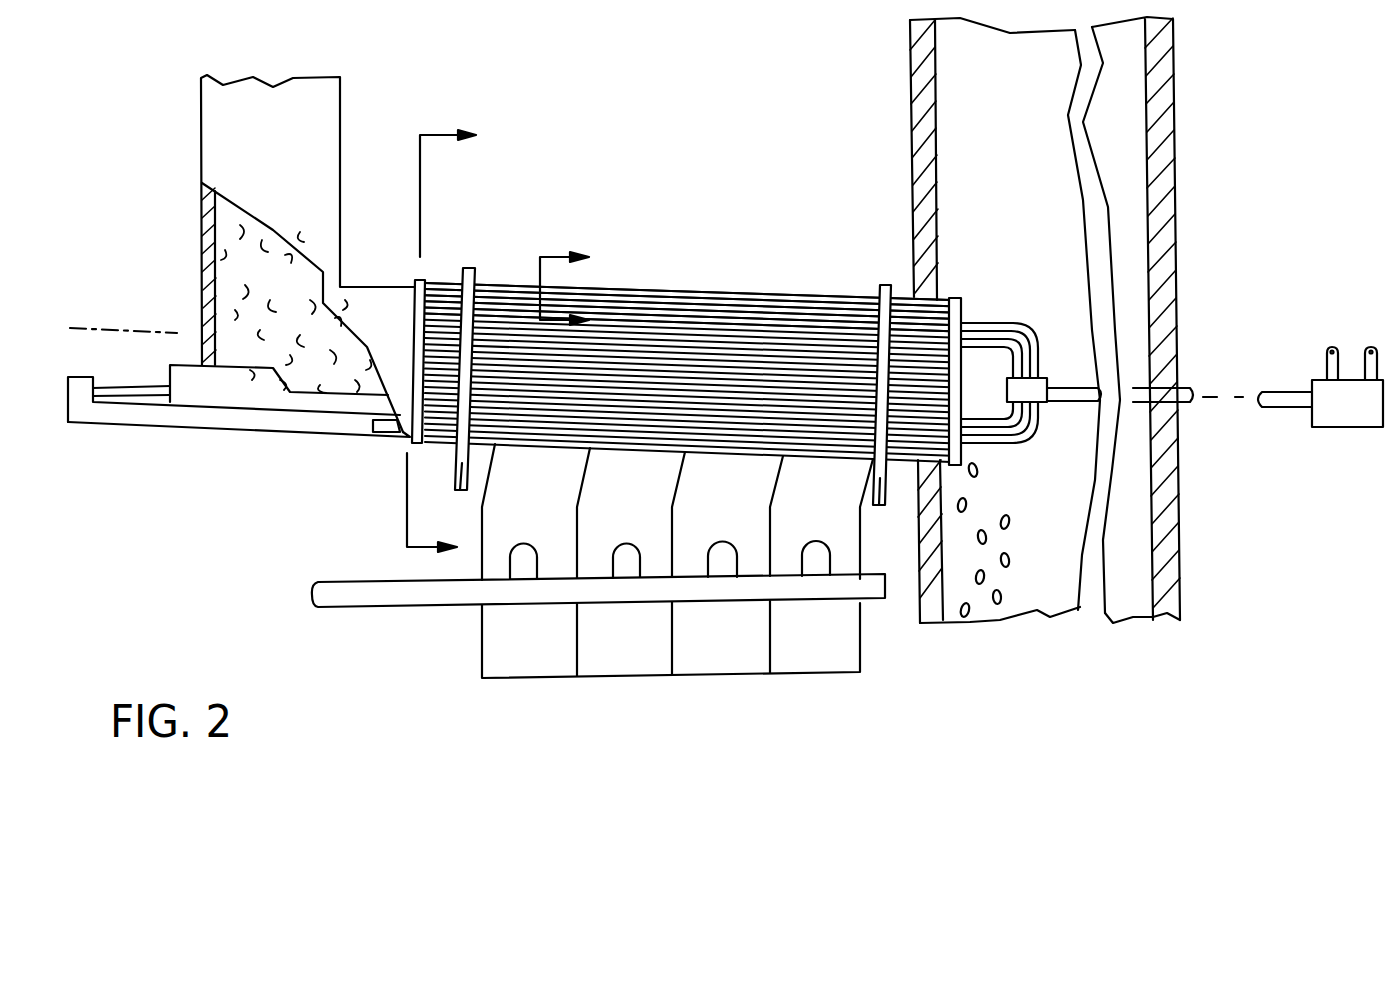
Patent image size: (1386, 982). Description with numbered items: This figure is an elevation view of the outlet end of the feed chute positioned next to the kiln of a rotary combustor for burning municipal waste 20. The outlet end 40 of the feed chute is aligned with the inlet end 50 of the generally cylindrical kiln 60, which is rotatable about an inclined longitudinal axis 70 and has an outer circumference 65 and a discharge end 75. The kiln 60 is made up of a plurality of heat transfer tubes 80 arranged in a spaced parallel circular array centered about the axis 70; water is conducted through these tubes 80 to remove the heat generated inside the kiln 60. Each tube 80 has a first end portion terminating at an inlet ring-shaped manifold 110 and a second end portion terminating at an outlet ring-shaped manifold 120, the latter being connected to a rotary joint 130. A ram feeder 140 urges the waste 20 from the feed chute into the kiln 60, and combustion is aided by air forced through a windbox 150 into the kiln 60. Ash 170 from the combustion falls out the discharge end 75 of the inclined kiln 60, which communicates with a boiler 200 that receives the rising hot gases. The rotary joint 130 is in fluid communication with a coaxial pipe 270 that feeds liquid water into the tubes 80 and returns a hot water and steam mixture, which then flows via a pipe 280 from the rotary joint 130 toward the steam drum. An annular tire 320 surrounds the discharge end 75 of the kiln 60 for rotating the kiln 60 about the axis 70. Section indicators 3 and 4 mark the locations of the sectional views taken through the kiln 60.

The municipal waste 20 is at (247, 262).
The outlet end 40 is at (412, 287).
The inlet end 50 is at (418, 287).
The kiln 60 is at (627, 293).
The outer circumference 65 is at (690, 293).
The inclined longitudinal axis 70 is at (95, 328).
The discharge end 75 is at (964, 310).
The heat transfer tubes 80 is at (750, 317).
The inlet ring-shaped manifold 110 is at (407, 437).
The outlet ring-shaped manifold 120 is at (956, 300).
The rotary joint 130 is at (1330, 422).
The ram feeder 140 is at (170, 376).
The windbox 150 is at (497, 645).
The ash 170 is at (1005, 517).
The boiler 200 is at (912, 125).
The coaxial pipe 270 is at (1082, 386).
The pipe 280 is at (1327, 362).
The annular tire 320 is at (885, 283).
The section line 3- 3 is at (575, 290).
The section line 4- 4 is at (458, 343).